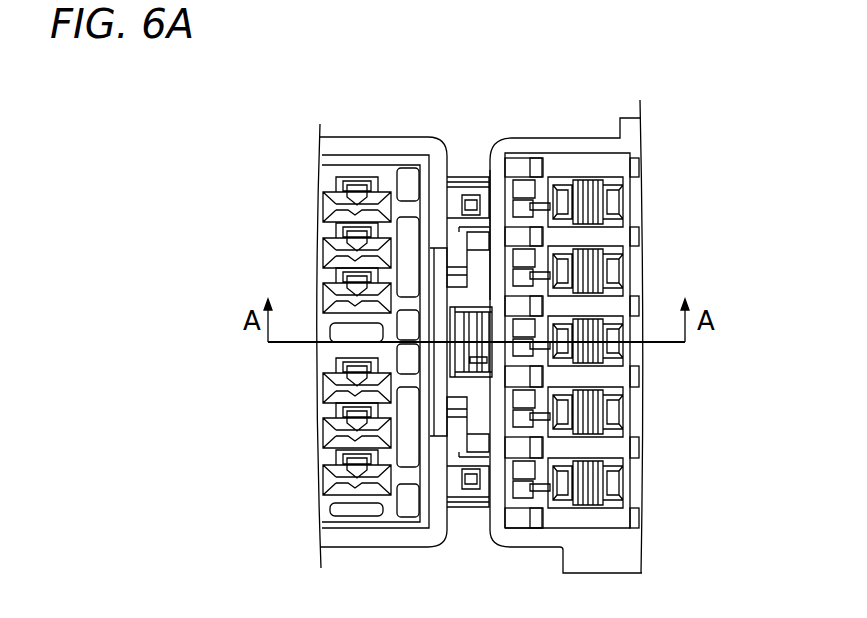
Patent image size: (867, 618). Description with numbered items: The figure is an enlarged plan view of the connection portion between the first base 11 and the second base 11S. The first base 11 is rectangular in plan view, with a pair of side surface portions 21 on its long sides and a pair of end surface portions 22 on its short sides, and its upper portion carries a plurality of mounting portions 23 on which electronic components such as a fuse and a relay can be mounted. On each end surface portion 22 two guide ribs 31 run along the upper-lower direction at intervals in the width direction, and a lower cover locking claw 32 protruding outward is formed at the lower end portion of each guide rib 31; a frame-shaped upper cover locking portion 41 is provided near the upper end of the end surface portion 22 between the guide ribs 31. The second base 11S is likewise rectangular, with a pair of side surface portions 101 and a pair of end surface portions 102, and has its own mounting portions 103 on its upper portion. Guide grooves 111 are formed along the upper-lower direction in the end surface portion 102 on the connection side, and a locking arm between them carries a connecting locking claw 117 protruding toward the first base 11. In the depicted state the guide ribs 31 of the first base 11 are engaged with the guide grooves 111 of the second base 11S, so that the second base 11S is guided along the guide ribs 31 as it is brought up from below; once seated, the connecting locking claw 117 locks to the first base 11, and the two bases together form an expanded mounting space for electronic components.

The first base 11 is at (598, 124).
The second base 11S is at (311, 120).
The side surface portion 21 is at (555, 137).
The end surface portion 22 is at (491, 168).
The mounting portion 23 is at (637, 263).
The guide rib 31 is at (483, 167).
The lower cover locking claw 32 is at (447, 186).
The upper cover locking portion 41 is at (443, 357).
The side surface portion 101 is at (360, 137).
The end surface portion 102 is at (455, 170).
The mounting portion 103 is at (317, 250).
The guide groove 111 is at (460, 210).
The connecting locking claw 117 is at (533, 358).